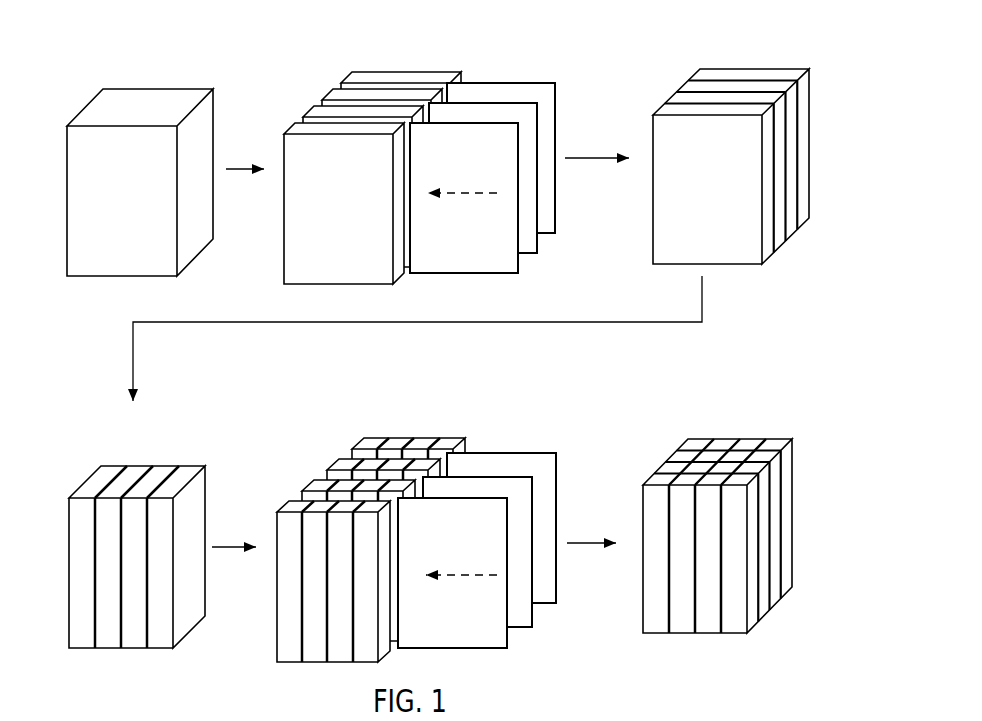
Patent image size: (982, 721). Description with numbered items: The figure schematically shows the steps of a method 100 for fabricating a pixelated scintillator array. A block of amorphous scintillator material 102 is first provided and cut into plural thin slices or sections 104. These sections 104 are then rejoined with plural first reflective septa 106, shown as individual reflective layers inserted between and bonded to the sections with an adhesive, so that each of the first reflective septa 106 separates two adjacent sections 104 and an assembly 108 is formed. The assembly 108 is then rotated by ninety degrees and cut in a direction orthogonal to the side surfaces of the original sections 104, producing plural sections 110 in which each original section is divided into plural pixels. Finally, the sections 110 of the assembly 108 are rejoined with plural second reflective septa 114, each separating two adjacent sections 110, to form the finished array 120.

The convolutional neural network 100 is at (596, 717).
The block of amorphous scintillator material 102 is at (126, 72).
The sections 104 is at (695, 72).
The first reflective septa 106 is at (725, 77).
The assembly 108 is at (806, 48).
The sections 110 is at (685, 440).
The second reflective septa 114 is at (715, 450).
The array 120 is at (777, 425).